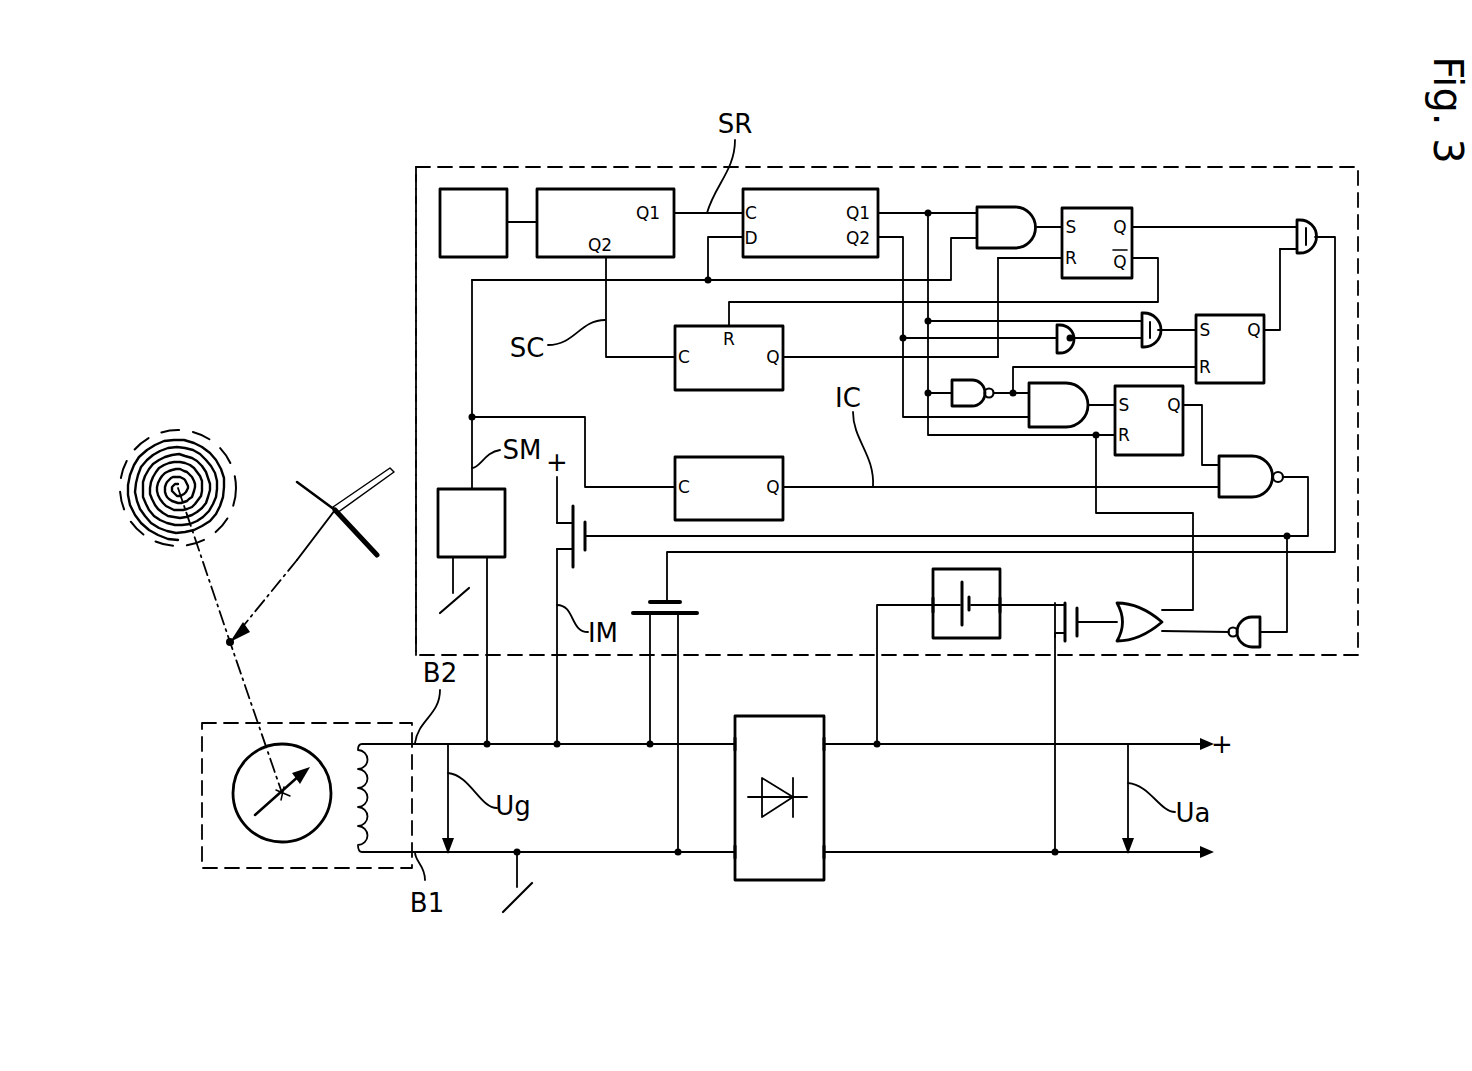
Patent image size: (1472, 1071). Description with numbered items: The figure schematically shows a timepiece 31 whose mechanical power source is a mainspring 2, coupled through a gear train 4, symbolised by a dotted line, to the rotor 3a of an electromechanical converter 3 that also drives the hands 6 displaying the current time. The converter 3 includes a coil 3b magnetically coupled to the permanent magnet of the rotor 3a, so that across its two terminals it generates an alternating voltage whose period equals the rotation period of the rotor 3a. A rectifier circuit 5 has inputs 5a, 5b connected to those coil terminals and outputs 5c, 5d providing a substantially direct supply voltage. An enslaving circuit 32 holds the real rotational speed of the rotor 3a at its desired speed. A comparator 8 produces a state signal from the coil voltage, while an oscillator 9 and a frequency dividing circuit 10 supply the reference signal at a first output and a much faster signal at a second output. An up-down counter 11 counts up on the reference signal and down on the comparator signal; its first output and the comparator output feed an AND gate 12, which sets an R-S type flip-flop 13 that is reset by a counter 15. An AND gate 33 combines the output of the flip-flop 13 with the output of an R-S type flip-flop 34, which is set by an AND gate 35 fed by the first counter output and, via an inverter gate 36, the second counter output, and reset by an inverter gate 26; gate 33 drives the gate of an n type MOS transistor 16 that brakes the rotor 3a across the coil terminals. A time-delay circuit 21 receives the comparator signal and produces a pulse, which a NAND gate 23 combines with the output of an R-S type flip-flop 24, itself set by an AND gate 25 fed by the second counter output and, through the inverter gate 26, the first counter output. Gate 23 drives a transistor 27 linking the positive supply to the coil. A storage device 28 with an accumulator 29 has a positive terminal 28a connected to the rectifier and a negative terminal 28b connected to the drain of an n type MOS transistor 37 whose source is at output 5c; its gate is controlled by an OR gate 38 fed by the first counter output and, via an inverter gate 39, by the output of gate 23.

The mainspring 2 is at (190, 440).
The electromechanical converter 3 is at (335, 723).
The rotor 3a is at (250, 800).
The coil 3b is at (358, 822).
The gear train 4 is at (245, 690).
The rectifier circuit 5 is at (778, 797).
The rectifier input 5a is at (735, 855).
The rectifier input 5b is at (735, 742).
The rectifier output 5c is at (824, 855).
The rectifier output 5d is at (824, 742).
The hands 6 is at (336, 468).
The comparator 8 is at (457, 505).
The oscillator 9 is at (469, 203).
The frequency dividing circuit 10 is at (600, 203).
The up-down counter 11 is at (810, 203).
The AND gate 12 is at (998, 215).
The R-S type flip-flop 13 is at (1097, 215).
The counter 15 is at (678, 340).
The n type MOS transistor 16 is at (697, 598).
The time-delay circuit 21 is at (728, 470).
The NAND gate 23 is at (1237, 470).
The R-S type flip-flop 24 is at (1157, 445).
The AND gate 25 is at (1047, 413).
The inverter gate 26 is at (963, 405).
The transistor 27 is at (596, 551).
The storage device 28 is at (965, 606).
The positive terminal 28a is at (933, 600).
The negative terminal 28b is at (1000, 600).
The accumulator 29 is at (950, 633).
The timepiece 31 is at (350, 220).
The enslaving circuit 32 is at (416, 280).
The AND gate 33 is at (1305, 225).
The R-S type flip-flop 34 is at (1230, 330).
The AND gate 35 is at (1152, 325).
The inverter gate 36 is at (1060, 338).
The n type MOS transistor 37 is at (1090, 611).
The OR gate 38 is at (1138, 612).
The inverter gate 39 is at (1237, 618).